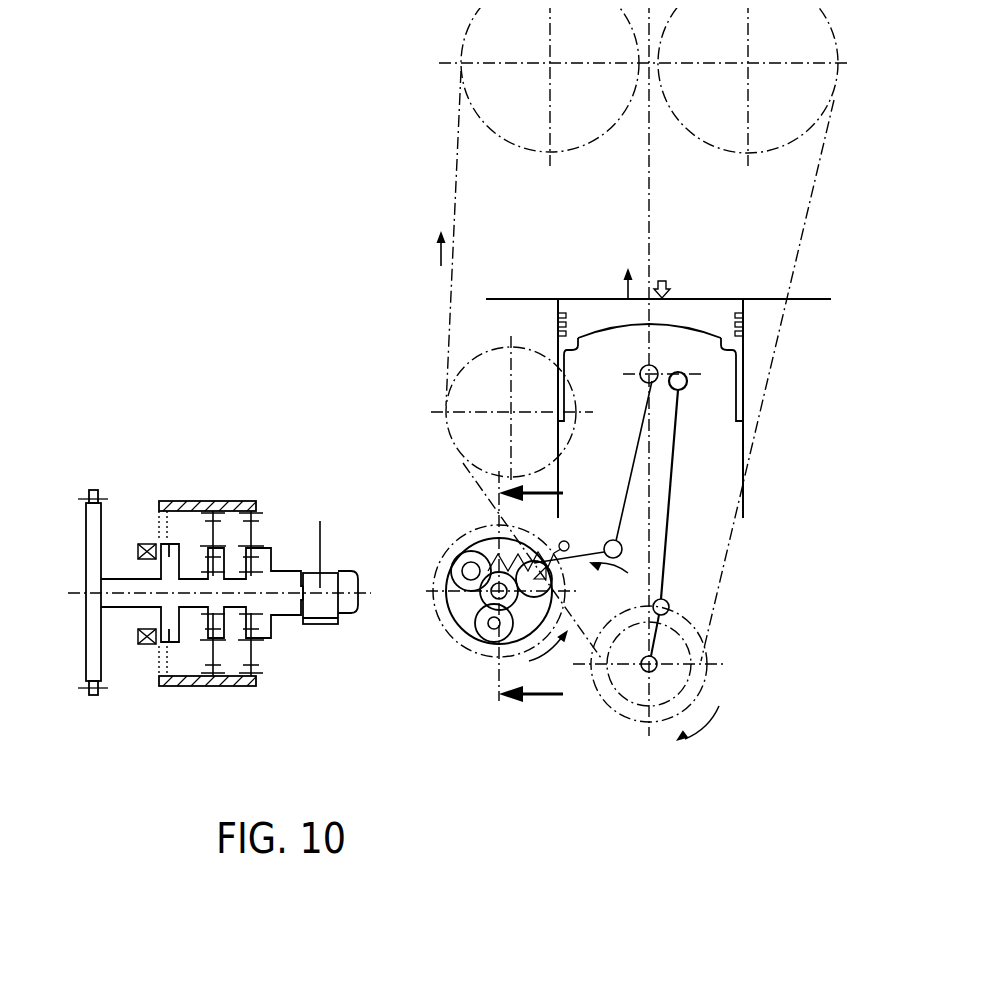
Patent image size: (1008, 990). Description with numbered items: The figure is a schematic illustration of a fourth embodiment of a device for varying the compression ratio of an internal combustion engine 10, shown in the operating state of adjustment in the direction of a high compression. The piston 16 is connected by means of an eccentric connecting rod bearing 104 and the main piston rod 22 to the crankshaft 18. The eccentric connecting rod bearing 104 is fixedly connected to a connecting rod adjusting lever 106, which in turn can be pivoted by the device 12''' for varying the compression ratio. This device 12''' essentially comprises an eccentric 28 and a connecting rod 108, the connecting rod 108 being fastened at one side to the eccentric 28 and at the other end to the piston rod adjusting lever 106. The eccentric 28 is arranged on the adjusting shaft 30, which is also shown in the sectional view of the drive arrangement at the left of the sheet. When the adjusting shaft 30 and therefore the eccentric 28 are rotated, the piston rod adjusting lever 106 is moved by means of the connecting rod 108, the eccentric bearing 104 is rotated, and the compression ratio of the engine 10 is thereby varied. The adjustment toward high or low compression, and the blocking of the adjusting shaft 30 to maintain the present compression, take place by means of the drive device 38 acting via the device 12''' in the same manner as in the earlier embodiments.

The internal combustion engine 10 is at (386, 293).
The device for varying the compression ratio 12''' is at (464, 408).
The piston 16 is at (722, 324).
The crankshaft 18 is at (653, 644).
The main piston rod 22 is at (668, 537).
The eccentric 28 is at (446, 576).
The adjusting shaft 30 is at (282, 602).
The drive device 38 is at (113, 724).
The eccentric connecting rod bearing 104 is at (653, 367).
The connecting rod adjusting lever 106 is at (640, 447).
The connecting rod 108 is at (607, 541).